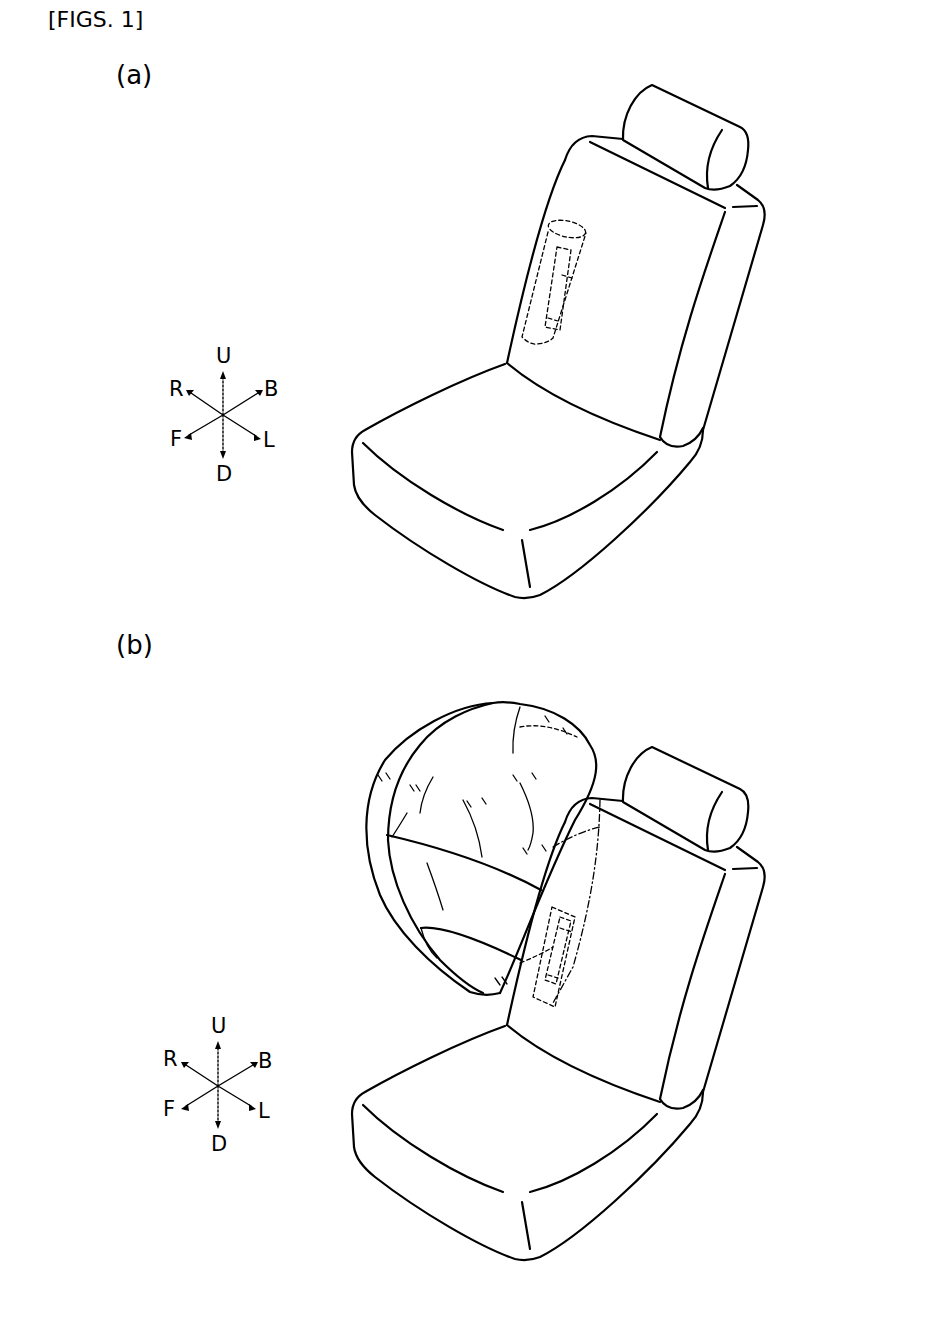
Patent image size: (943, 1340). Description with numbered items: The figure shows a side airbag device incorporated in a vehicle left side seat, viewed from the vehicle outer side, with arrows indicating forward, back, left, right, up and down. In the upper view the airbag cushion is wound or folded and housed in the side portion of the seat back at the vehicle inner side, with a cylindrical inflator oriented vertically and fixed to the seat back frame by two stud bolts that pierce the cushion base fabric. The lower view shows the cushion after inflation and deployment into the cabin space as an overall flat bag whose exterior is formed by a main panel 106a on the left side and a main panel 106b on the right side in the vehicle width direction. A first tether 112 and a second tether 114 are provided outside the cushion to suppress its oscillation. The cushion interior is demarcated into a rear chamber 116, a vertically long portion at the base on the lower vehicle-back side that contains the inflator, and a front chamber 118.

The main panel 106a is at (415, 862).
The main panel 106b is at (440, 825).
The first tether 112 is at (458, 1002).
The second tether 114 is at (432, 948).
The rear chamber 116 is at (586, 901).
The front chamber 118 is at (545, 711).